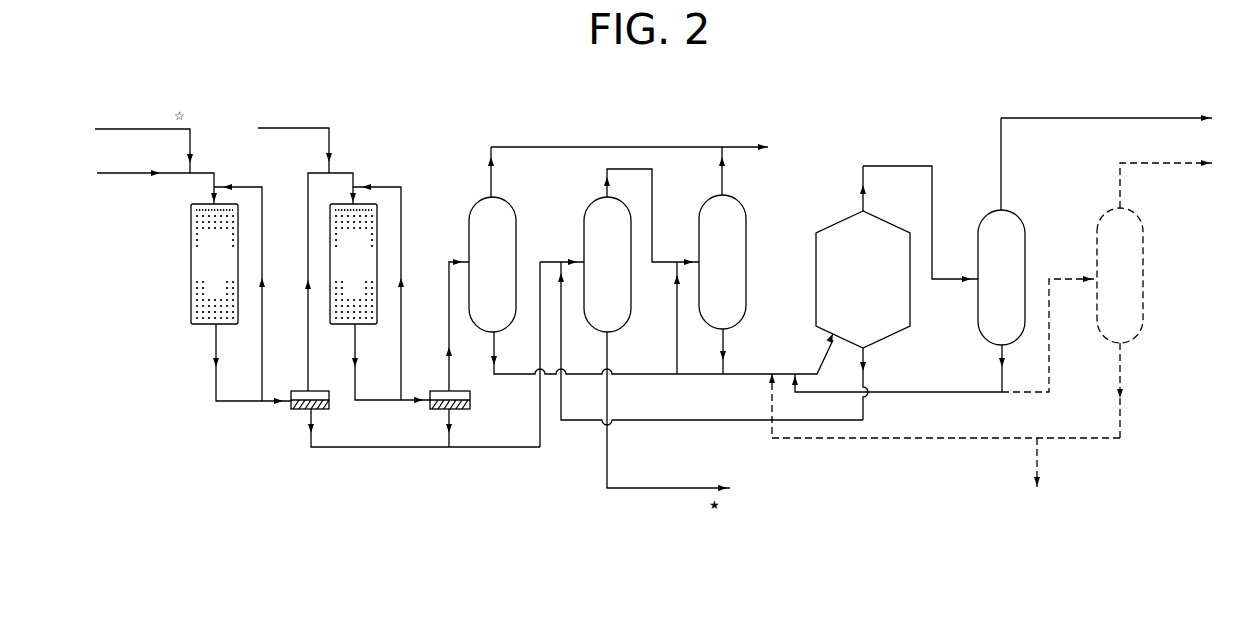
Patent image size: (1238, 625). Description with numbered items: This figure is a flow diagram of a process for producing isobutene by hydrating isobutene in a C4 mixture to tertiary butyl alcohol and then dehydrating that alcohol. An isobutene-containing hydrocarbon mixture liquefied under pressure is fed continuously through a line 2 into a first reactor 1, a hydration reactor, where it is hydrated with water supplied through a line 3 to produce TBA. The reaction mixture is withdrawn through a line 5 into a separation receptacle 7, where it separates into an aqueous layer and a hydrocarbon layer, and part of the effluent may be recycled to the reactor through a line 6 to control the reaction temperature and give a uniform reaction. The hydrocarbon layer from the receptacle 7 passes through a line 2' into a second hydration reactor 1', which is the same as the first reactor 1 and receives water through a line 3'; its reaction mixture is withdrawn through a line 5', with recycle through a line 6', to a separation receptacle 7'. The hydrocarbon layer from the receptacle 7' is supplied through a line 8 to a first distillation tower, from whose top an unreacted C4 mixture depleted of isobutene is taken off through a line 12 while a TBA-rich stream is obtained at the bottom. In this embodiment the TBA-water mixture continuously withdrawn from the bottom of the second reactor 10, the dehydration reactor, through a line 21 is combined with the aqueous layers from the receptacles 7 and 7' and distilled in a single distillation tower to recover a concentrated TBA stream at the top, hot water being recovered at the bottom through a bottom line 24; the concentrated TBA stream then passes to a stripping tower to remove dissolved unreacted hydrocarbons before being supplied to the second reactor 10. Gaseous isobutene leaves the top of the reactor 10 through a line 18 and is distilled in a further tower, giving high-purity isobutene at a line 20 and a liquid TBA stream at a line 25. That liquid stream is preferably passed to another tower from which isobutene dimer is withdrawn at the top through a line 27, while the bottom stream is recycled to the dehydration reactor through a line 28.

The first reactor 1 is at (195, 264).
The first reactor 1' is at (384, 254).
The line 2 is at (157, 191).
The line 2' is at (312, 267).
The line 3 is at (144, 131).
The line 3' is at (295, 130).
The line 5 is at (233, 364).
The line 5' is at (377, 363).
The line 6 is at (239, 292).
The line 6' is at (378, 292).
The separation receptacle 7 is at (406, 422).
The separation receptacle 7' is at (468, 419).
The line 8 is at (451, 357).
The second reactor 10 is at (816, 292).
The line 12 is at (620, 142).
The line 18 is at (895, 166).
The line 20 is at (1125, 118).
The line 21 is at (656, 420).
The bottoms withdrawal line 24 is at (673, 488).
The line 25 is at (997, 359).
The line 27 is at (1170, 163).
The line 28 is at (878, 440).